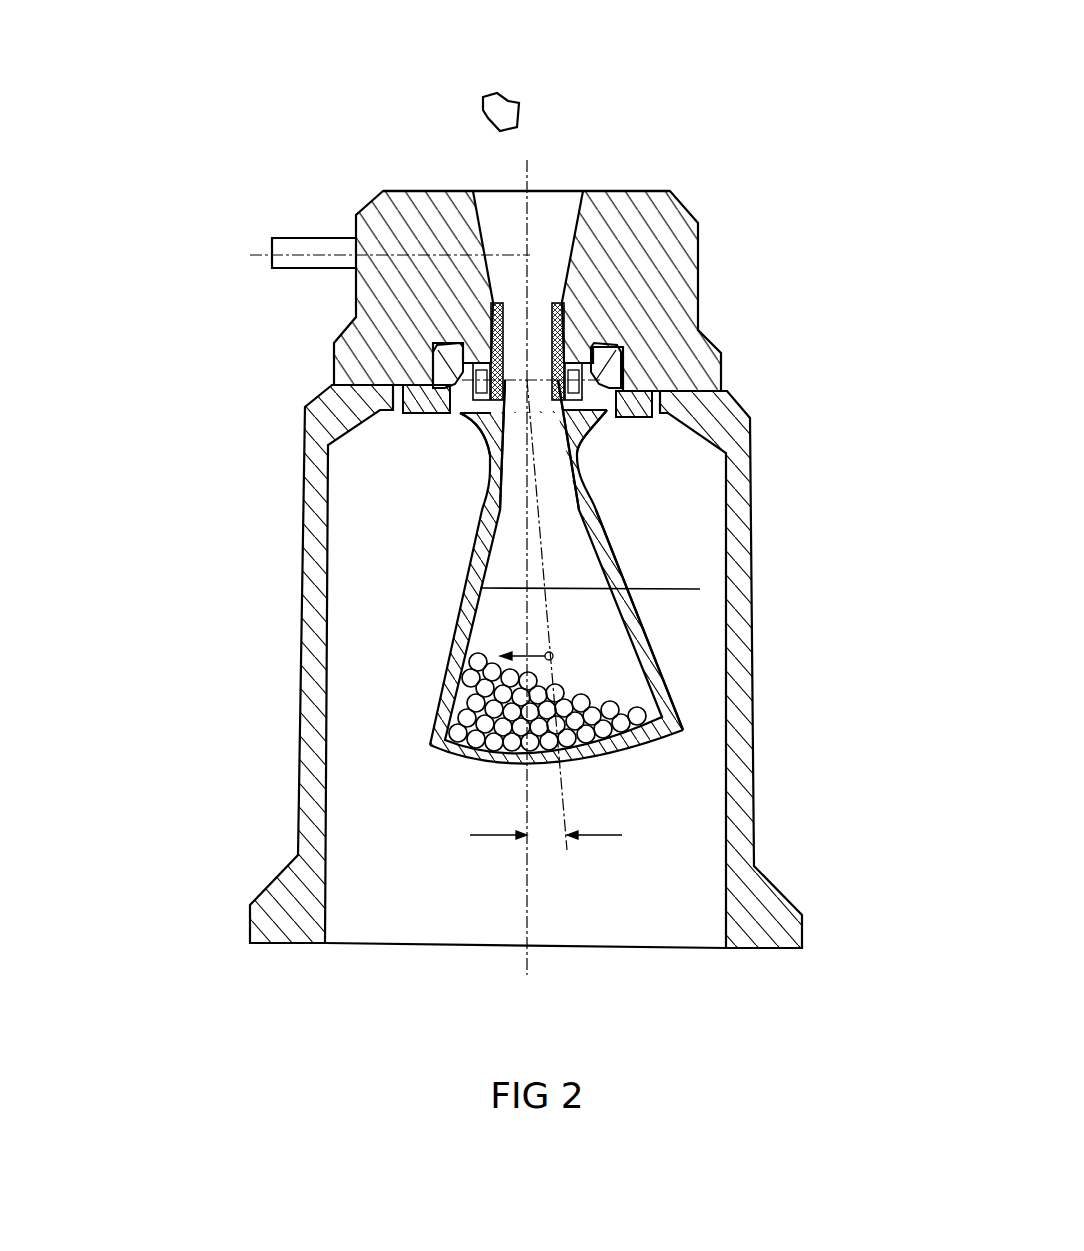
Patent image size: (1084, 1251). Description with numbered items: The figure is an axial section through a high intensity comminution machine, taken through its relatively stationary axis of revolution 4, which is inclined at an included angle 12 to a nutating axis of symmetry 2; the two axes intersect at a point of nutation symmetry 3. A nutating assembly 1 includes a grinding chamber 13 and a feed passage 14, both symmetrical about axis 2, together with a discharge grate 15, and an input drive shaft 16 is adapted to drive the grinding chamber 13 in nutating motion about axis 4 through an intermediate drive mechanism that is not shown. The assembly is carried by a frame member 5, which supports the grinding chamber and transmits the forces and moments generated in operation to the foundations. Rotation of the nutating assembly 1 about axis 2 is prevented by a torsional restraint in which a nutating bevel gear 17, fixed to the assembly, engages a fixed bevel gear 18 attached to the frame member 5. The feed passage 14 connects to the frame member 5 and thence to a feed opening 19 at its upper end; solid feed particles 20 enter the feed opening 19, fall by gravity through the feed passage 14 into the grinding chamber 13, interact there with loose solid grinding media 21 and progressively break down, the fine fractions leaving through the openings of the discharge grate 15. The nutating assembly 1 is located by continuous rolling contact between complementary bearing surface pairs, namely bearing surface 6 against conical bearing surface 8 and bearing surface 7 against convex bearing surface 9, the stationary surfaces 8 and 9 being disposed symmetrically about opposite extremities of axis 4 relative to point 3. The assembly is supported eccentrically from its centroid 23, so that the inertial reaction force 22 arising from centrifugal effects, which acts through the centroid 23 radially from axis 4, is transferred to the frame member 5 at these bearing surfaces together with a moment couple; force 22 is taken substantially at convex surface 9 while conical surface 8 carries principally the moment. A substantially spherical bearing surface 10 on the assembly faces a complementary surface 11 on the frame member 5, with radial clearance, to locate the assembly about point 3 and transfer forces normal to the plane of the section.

The nutating assembly 1 is at (610, 462).
The nutating axis of symmetry 2 is at (562, 799).
The point of nutation symmetry 3 is at (553, 365).
The stationary axis of revolution 4 is at (530, 973).
The frame member 5 is at (334, 365).
The bearing surface 6 is at (490, 443).
The bearing surface 7 is at (615, 378).
The conical bearing surface 8 is at (473, 357).
The convex bearing surface 9 is at (605, 435).
The bearing surface 10 is at (615, 388).
The complementary surface 11 is at (393, 402).
The included angle 12 is at (544, 840).
The grinding chamber 13 is at (700, 589).
The feed passage 14 is at (557, 433).
The discharge grate 15 is at (440, 750).
The input drive shaft 16 is at (316, 238).
The nutating bevel gear 17 is at (503, 463).
The fixed bevel gear 18 is at (490, 357).
The feed opening 19 is at (550, 223).
The solid feed particles 20 is at (508, 98).
The loose solid grinding media 21 is at (605, 714).
The inertial reaction force 22 is at (493, 657).
The centroid 23 is at (552, 656).